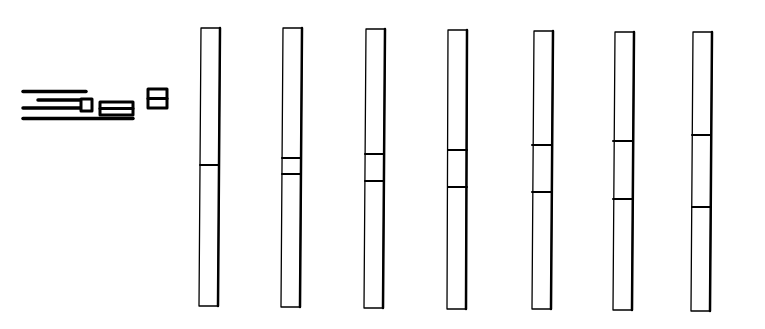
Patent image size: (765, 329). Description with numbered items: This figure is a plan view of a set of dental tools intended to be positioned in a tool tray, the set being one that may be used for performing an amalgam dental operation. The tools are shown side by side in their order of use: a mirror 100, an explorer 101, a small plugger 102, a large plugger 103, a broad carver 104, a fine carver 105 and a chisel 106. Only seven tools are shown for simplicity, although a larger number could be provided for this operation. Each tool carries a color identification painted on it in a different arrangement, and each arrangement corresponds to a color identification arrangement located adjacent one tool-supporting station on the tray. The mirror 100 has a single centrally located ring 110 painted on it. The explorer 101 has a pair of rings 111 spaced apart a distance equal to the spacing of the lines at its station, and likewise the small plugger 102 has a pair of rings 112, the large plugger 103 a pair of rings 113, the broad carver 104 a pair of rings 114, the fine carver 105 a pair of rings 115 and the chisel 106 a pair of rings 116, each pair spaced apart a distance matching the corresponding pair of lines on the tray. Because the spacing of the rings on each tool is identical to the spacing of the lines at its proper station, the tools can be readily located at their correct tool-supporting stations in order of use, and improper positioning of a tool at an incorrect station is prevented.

The mirror 100 is at (214, 27).
The explorer 101 is at (300, 8).
The small plugger 102 is at (386, 9).
The large plugger 103 is at (470, 10).
The broad carver 104 is at (545, 31).
The fine carver 105 is at (638, 12).
The chisel 106 is at (724, 12).
The ring 110 is at (200, 165).
The pair of rings 111 is at (282, 174).
The pair of rings 112 is at (365, 181).
The pair of rings 113 is at (448, 187).
The pair of rings 114 is at (532, 192).
The pair of rings 115 is at (613, 199).
The pair of rings 116 is at (692, 207).